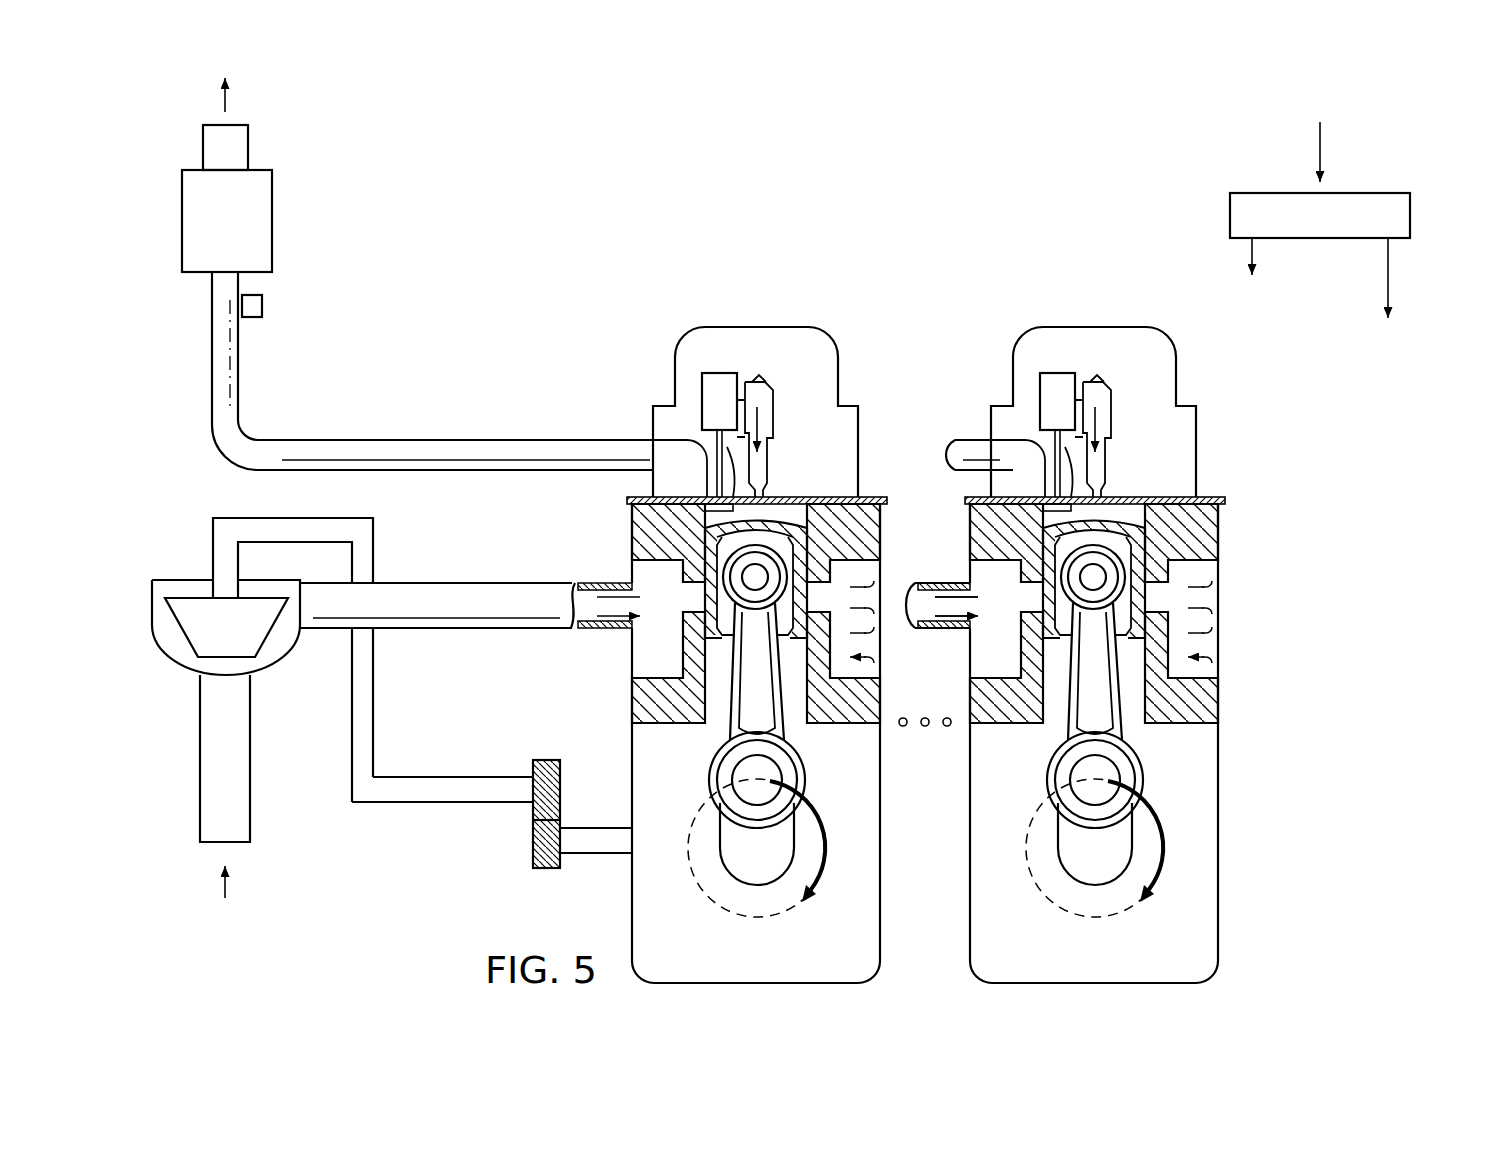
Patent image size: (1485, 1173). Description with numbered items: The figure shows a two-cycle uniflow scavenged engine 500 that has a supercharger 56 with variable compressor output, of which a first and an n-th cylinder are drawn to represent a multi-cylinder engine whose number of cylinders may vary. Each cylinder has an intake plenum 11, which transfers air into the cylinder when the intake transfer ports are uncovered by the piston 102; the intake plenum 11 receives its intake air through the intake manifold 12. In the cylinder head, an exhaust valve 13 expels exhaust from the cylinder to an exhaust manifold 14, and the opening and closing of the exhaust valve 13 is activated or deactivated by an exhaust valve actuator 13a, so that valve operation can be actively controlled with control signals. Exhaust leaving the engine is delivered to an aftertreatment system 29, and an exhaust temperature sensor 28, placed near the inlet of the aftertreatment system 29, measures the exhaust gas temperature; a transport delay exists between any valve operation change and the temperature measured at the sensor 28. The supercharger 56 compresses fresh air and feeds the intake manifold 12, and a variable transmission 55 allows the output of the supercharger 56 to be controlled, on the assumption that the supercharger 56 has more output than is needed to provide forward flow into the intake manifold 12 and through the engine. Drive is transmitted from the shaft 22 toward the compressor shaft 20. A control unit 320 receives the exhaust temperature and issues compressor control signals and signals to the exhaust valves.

The intake plenum 11 is at (880, 570).
The intake manifold 12 is at (487, 582).
The exhaust valve 13 is at (688, 455).
The exhaust valve actuator 13a is at (737, 378).
The exhaust manifold 14 is at (476, 440).
The compressor shaft 20 is at (213, 542).
The shaft 22 is at (597, 855).
The exhaust temperature sensor 28 is at (262, 305).
The aftertreatment system 29 is at (182, 222).
The variable transmission 55 is at (547, 870).
The supercharger 56 is at (242, 647).
The piston 102 is at (780, 520).
The control unit 320 is at (1351, 192).
The two-cycle uniflow scavenged engine 500 is at (1120, 127).